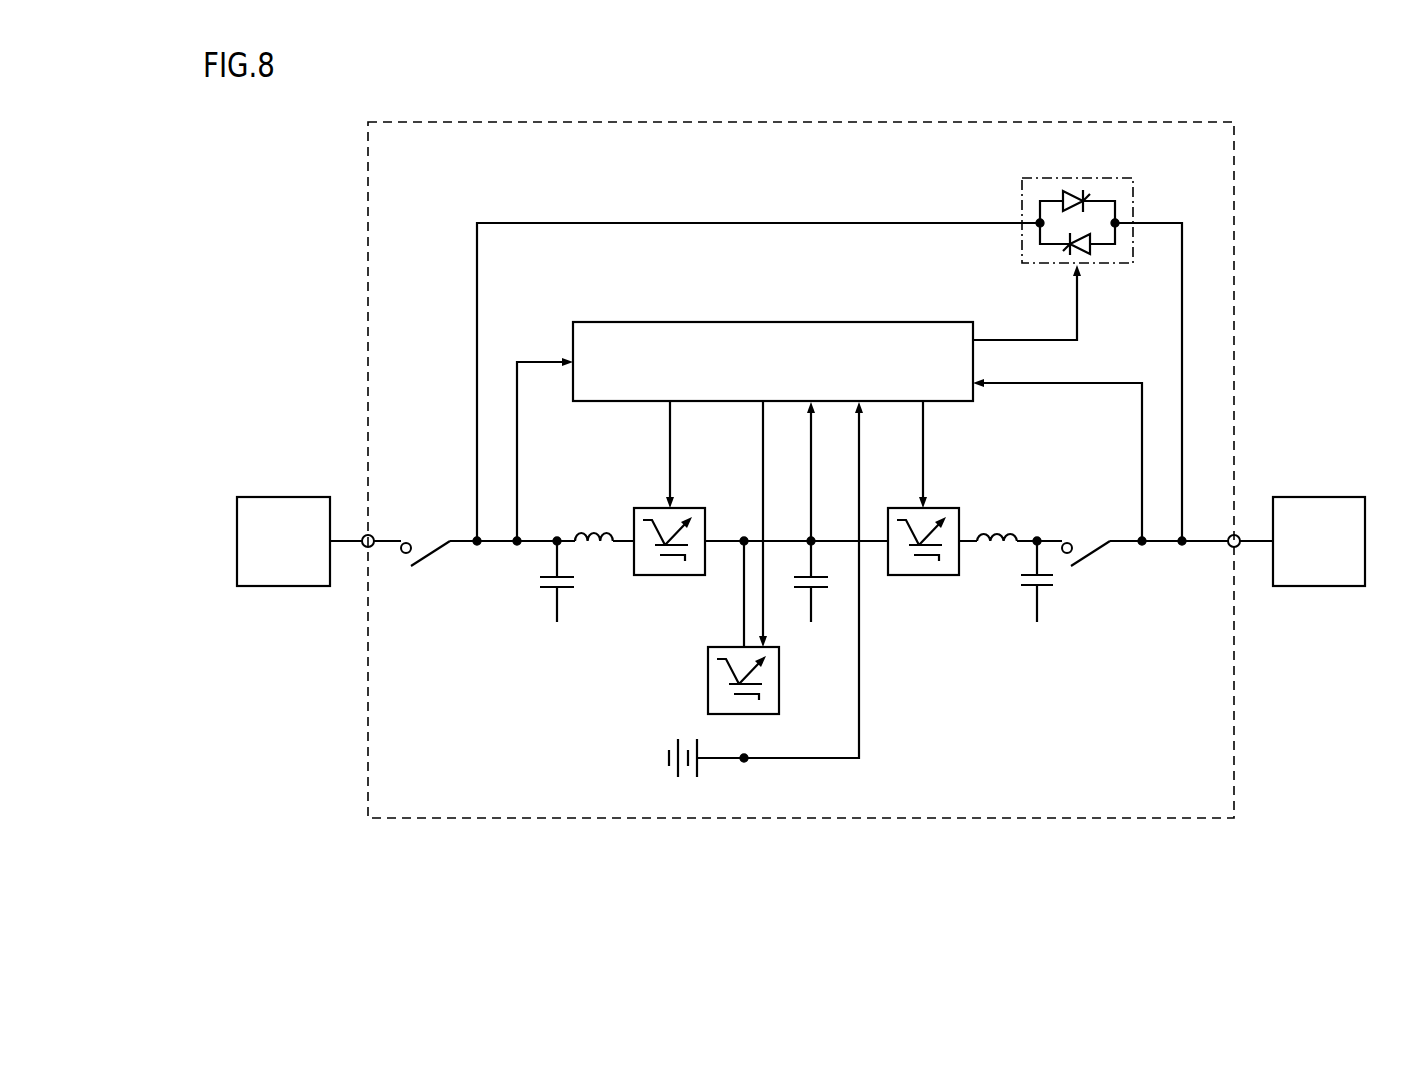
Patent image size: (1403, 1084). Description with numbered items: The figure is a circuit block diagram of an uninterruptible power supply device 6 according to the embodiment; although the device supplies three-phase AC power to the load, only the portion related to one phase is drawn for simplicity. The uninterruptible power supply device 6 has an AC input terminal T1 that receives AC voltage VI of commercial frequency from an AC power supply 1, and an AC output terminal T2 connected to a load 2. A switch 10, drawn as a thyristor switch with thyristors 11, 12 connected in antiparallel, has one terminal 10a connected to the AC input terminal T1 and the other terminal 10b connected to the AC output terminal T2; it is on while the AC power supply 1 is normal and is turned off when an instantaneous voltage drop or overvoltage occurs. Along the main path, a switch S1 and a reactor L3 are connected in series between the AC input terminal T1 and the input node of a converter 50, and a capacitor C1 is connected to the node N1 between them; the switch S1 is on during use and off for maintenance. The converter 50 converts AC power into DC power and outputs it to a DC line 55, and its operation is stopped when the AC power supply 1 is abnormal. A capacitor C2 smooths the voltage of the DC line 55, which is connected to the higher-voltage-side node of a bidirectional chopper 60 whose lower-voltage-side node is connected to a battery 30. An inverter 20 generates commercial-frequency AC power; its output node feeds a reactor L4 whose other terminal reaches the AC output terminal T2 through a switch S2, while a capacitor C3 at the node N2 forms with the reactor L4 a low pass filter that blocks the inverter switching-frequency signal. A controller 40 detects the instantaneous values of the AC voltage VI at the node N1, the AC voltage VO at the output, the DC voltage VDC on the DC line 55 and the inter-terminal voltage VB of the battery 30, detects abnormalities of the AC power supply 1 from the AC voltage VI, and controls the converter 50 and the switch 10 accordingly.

The AC power supply 1 is at (293, 497).
The load 2 is at (1323, 497).
The uninterruptible power supply device 6 is at (1190, 122).
The switch 10 is at (1080, 223).
The one terminal 10a is at (1036, 226).
The other terminal 10b is at (1119, 226).
The thyristor 11 is at (1068, 208).
The thyristor 12 is at (1078, 240).
The inverter 20 is at (934, 575).
The battery 30 is at (700, 762).
The controller 40 is at (938, 322).
The converter 50 is at (680, 575).
The DC line 55 is at (728, 531).
The bidirectional chopper 60 is at (760, 715).
The AC input terminal T1 is at (362, 546).
The AC output terminal T2 is at (1240, 546).
The switch S1 is at (434, 556).
The switch S2 is at (1093, 556).
The node N1 is at (477, 548).
The node N2 is at (1037, 534).
The capacitor C1 is at (563, 590).
The capacitor C2 is at (818, 590).
The capacitor C3 is at (1044, 590).
The reactor L3 is at (596, 530).
The reactor L4 is at (996, 530).
The AC voltage VI is at (543, 451).
The AC voltage VO is at (1059, 462).
The DC voltage instantaneous value VDC is at (832, 471).
The inter-terminal voltage VB is at (792, 762).